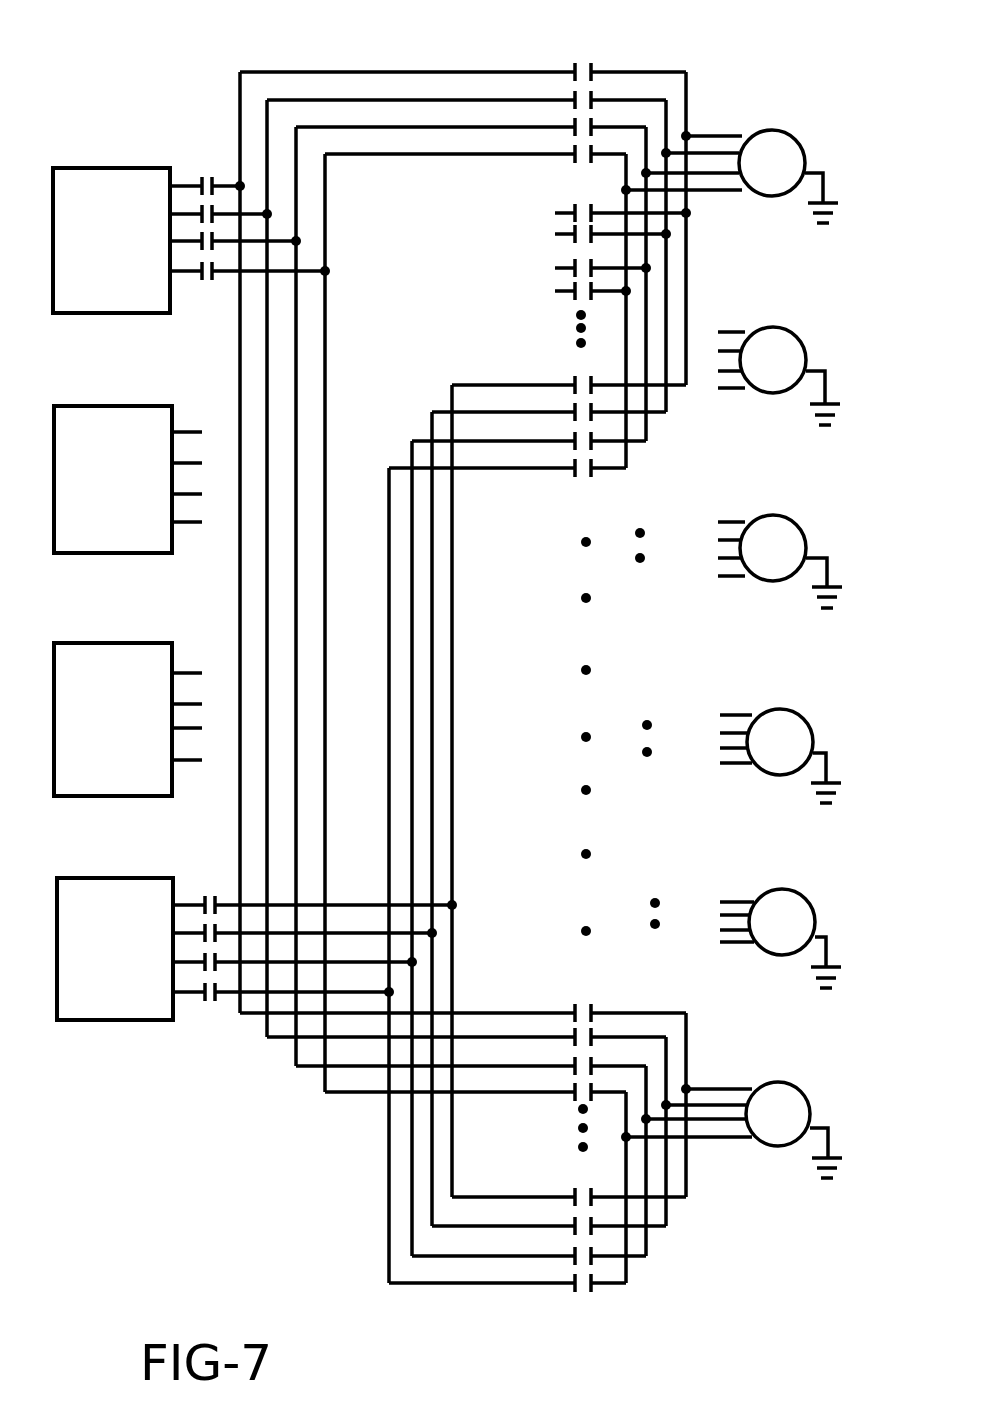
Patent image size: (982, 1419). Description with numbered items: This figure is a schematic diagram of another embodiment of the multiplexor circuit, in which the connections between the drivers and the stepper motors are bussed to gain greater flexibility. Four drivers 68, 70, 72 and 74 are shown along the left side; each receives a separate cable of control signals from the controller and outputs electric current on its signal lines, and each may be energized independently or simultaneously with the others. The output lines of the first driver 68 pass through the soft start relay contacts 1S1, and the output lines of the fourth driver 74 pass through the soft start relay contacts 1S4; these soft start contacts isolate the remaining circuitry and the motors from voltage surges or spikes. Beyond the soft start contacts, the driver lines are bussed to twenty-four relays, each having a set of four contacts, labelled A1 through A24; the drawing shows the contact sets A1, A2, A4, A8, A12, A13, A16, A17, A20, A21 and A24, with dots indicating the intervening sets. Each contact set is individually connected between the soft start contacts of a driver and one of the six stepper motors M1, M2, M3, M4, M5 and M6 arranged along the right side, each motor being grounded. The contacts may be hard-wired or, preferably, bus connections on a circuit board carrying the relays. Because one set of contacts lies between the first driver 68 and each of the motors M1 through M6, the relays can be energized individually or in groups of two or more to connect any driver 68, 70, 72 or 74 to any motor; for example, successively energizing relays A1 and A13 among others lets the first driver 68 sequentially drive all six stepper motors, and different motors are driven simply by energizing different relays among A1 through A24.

The driver 68 is at (88, 168).
The driver 70 is at (97, 406).
The driver 72 is at (108, 643).
The driver 74 is at (107, 878).
The soft start relay contacts 1S1 is at (202, 213).
The soft start relay contacts 1S4 is at (210, 932).
The relay contact set A1 is at (575, 98).
The relay contact set A2 is at (575, 237).
The relay contact set A4 is at (575, 412).
The relay contact set A8 is at (637, 527).
The relay contact set A12 is at (646, 593).
The relay contact set A13 is at (646, 720).
The relay contact set A16 is at (647, 782).
The relay contact set A17 is at (656, 898).
The relay contact set A20 is at (656, 953).
The relay contact set A21 is at (584, 1032).
The relay contact set A24 is at (584, 1224).
The stepper motor M1 is at (732, 176).
The stepper motor M2 is at (779, 376).
The stepper motor M3 is at (780, 561).
The stepper motor M4 is at (780, 756).
The stepper motor M5 is at (780, 938).
The stepper motor M6 is at (734, 1130).